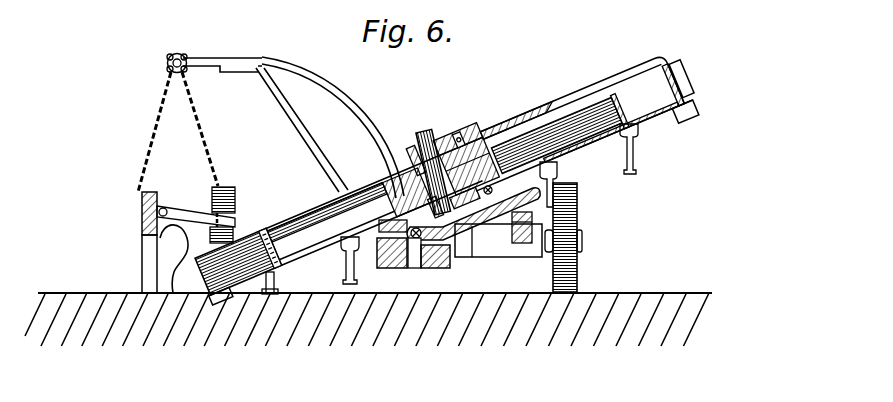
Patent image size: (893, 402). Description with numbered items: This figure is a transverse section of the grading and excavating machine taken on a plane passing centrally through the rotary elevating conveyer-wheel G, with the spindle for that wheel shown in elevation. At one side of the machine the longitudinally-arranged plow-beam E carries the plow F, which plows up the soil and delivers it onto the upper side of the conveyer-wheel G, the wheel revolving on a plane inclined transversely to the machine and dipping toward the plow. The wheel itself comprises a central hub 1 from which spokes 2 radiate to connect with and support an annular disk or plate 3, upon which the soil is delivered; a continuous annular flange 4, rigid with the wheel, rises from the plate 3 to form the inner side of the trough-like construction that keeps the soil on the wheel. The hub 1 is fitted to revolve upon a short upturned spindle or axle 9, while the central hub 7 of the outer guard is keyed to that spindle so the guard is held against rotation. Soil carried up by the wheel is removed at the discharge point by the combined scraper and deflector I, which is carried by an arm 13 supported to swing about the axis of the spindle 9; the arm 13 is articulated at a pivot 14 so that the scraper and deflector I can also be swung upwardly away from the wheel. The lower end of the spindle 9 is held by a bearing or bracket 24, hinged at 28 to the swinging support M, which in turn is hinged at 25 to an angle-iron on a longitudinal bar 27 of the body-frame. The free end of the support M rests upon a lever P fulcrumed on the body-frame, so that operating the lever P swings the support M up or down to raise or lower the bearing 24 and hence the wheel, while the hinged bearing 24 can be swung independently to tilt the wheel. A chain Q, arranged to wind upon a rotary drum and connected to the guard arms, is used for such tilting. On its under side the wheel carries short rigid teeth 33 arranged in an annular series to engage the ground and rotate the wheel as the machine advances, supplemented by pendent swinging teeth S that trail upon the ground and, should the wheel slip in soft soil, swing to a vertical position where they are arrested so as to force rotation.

The central hub 1 is at (382, 201).
The spokes 2 is at (408, 190).
The annular disk or plate 3 is at (657, 112).
The continuous annular flange 4 is at (616, 105).
The central hub 7 is at (401, 162).
The upturned spindle or axle 9 is at (428, 130).
The arm 13 is at (518, 112).
The pivot 14 is at (455, 134).
The bearing or bracket 24 is at (472, 257).
The hinge 25 is at (429, 266).
The longitudinal bar 27 is at (392, 257).
The hinge 28 is at (492, 190).
The teeth 33 is at (222, 296).
The plow-beam E is at (141, 224).
The plow F is at (177, 260).
The rotary elevating conveyer-wheel G is at (573, 121).
The combined scraper and deflector I is at (682, 75).
The swinging support M is at (500, 224).
The lever P is at (578, 221).
The chain Q is at (210, 147).
The pendent swinging teeth S is at (340, 274).